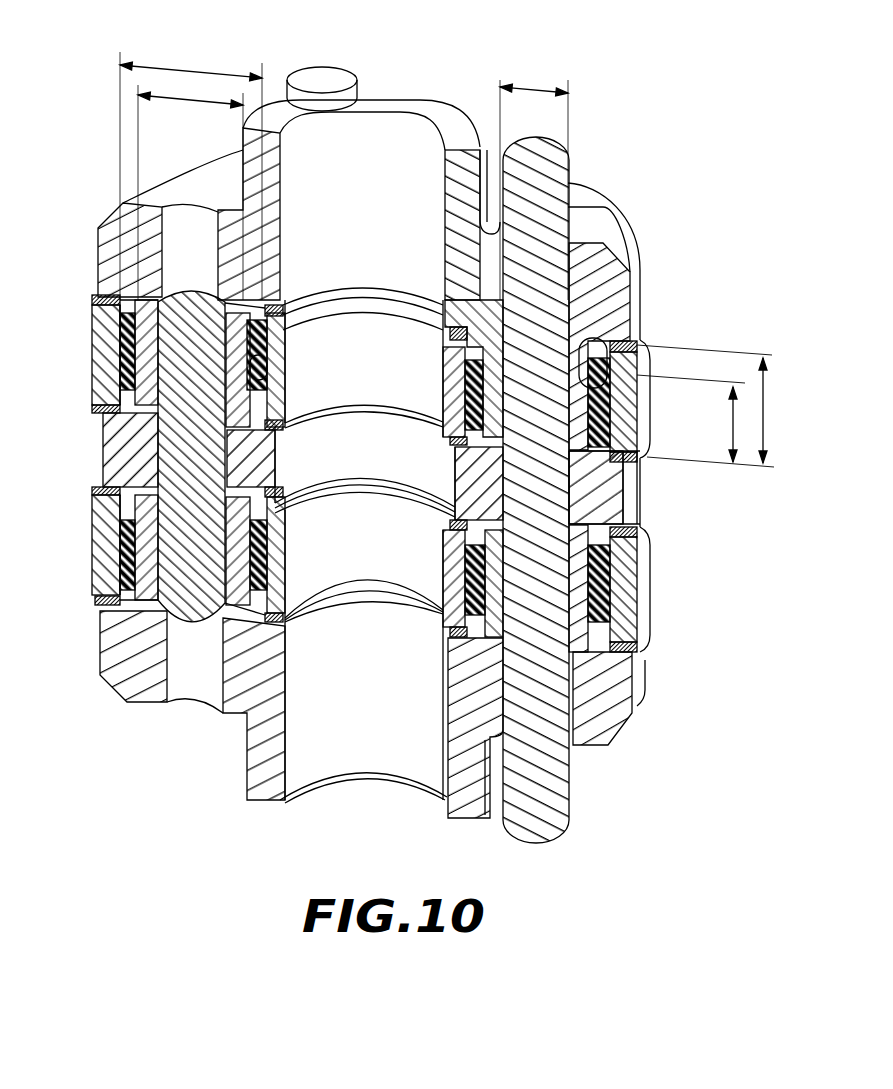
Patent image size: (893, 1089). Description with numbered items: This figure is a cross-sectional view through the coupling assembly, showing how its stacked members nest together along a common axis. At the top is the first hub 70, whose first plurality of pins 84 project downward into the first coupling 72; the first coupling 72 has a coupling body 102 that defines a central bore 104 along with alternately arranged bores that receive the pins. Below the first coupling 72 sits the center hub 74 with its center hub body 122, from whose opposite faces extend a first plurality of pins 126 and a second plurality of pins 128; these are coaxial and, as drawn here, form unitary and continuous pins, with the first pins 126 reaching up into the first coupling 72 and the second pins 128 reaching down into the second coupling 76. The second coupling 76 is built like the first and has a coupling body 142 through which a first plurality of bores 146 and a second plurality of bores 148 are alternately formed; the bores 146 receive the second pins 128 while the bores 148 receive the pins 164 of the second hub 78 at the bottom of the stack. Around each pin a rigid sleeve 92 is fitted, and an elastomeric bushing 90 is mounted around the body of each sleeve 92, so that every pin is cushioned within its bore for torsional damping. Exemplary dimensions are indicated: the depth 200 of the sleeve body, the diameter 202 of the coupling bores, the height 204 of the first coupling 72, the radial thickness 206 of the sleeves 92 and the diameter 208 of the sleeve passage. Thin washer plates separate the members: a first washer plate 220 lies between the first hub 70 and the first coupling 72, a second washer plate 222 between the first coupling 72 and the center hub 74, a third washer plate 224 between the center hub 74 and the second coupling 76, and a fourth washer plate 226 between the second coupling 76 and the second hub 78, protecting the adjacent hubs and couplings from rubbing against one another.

The first hub 70 is at (595, 293).
The first coupling 72 is at (107, 357).
The center hub 74 is at (590, 482).
The second coupling 76 is at (110, 523).
The second hub 78 is at (610, 695).
The first plurality of pins 84 is at (550, 202).
The bushing 90 is at (135, 330).
The sleeve 92 is at (485, 343).
The coupling body 102 is at (103, 380).
The central bore 104 is at (372, 333).
The center hub body 122 is at (610, 508).
The first plurality of pins 126 is at (198, 327).
The second plurality of pins 128 is at (198, 587).
The coupling body 142 is at (108, 573).
The first plurality of bores 146 is at (270, 373).
The second plurality of bores 148 is at (583, 343).
The pins 164 is at (548, 795).
The depth 200 is at (730, 425).
The diameter 202 is at (193, 67).
The height 204 is at (767, 412).
The radial thickness 206 is at (207, 101).
The diameter 208 is at (535, 90).
The first washer plate 220 is at (95, 300).
The second washer plate 222 is at (95, 408).
The third washer plate 224 is at (95, 490).
The fourth washer plate 226 is at (97, 600).